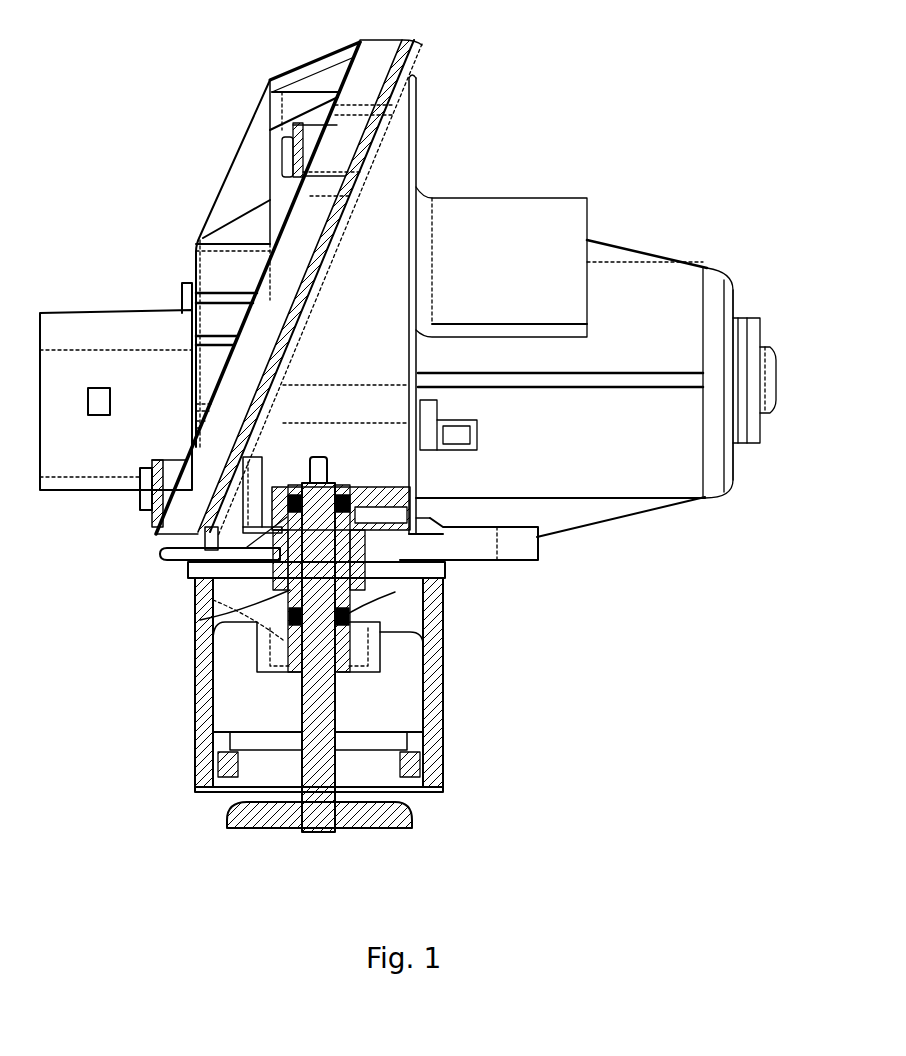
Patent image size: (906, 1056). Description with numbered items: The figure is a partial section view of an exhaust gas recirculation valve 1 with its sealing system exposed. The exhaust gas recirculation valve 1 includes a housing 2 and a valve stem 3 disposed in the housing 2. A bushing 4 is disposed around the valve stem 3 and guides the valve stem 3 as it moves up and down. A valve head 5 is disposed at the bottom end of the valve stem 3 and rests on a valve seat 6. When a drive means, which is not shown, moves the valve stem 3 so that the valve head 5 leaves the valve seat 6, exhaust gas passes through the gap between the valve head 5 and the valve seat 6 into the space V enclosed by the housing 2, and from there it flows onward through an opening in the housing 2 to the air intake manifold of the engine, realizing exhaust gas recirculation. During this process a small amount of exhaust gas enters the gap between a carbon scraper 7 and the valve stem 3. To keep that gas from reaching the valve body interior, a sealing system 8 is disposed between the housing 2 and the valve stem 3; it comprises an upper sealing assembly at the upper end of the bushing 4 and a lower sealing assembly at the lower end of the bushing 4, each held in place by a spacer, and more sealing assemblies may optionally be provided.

The exhaust gas recirculation valve 1 is at (523, 65).
The housing 2 is at (507, 547).
The valve stem 3 is at (380, 583).
The bushing 4 is at (408, 620).
The space V is at (398, 703).
The valve head 5 is at (235, 827).
The valve seat 6 is at (197, 790).
The carbon scraper 7 is at (300, 675).
The sealing system 8 is at (290, 598).